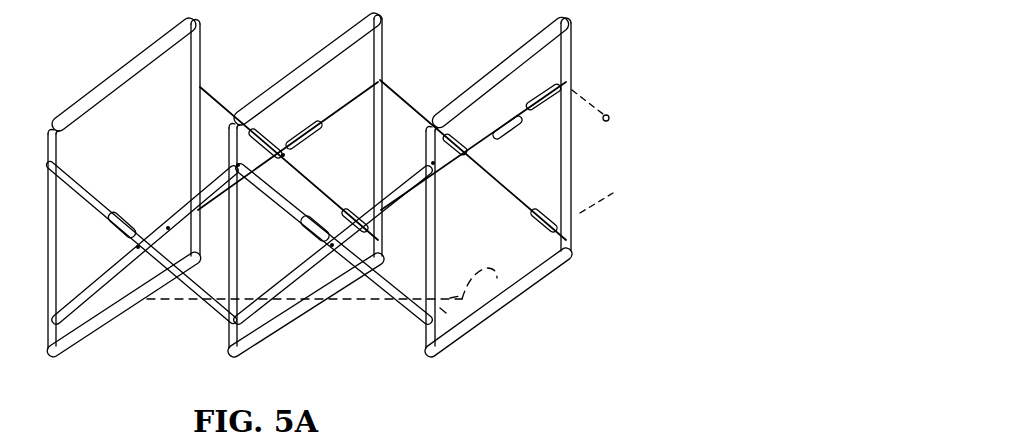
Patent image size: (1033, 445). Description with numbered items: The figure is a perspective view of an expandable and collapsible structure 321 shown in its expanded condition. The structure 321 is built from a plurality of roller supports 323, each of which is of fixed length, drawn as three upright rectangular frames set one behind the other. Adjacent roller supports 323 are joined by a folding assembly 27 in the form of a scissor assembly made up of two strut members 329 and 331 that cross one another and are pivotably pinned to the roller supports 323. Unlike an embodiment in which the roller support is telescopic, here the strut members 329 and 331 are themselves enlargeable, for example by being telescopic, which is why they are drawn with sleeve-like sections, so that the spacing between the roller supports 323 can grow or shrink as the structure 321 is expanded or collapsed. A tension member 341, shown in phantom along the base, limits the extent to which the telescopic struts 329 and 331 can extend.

The structure 321 is at (616, 63).
The roller support 323 is at (200, 47).
The folding assembly 27 is at (427, 104).
The strut member 329 is at (283, 284).
The strut member 331 is at (410, 303).
The tension member 341 is at (165, 303).